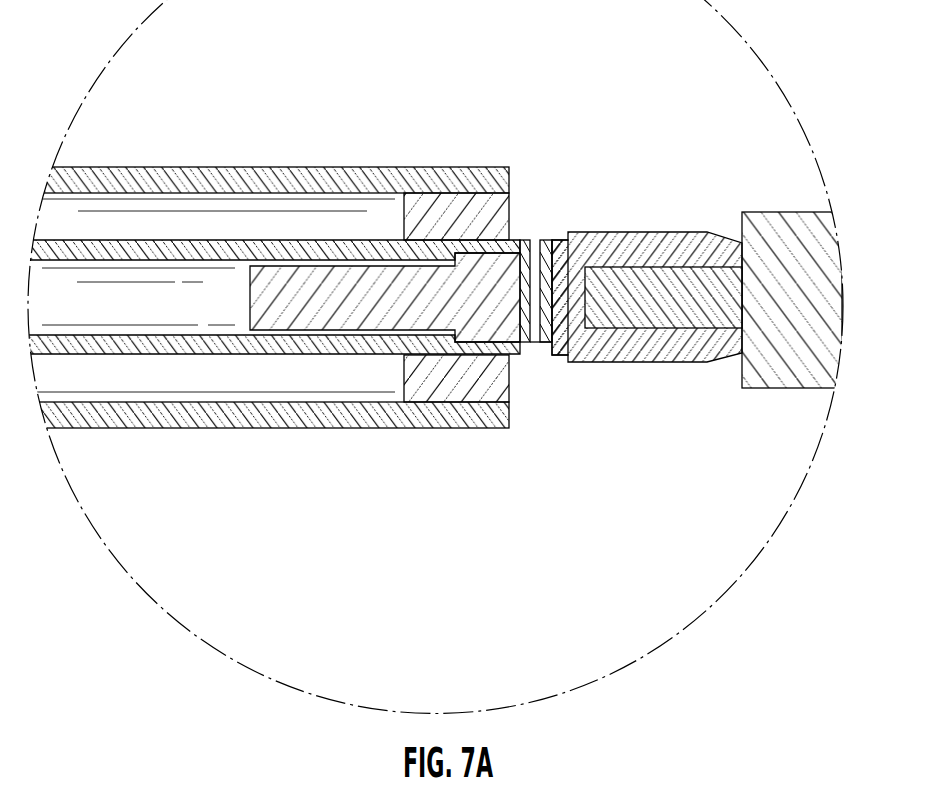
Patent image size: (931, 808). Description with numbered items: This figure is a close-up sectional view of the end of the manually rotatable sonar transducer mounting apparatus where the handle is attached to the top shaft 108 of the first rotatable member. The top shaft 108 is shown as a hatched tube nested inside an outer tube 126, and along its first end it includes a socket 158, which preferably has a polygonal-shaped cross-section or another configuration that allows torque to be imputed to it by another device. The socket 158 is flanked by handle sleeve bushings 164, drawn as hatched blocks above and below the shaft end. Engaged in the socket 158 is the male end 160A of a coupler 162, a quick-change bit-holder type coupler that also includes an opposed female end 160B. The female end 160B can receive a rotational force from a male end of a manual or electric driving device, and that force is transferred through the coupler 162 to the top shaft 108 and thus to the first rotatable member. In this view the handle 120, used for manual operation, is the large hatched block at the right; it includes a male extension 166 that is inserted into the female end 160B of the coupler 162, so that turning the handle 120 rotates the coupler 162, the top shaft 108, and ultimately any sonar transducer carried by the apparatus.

The top shaft 108 is at (164, 250).
The outer tube 126 is at (323, 180).
The socket 158 is at (360, 257).
The handle sleeve bushings 164 is at (478, 213).
The coupler 162 is at (593, 233).
The handle 120 is at (763, 212).
The male end 160A is at (362, 317).
The female end 160B is at (618, 347).
The male extension 166 is at (680, 305).